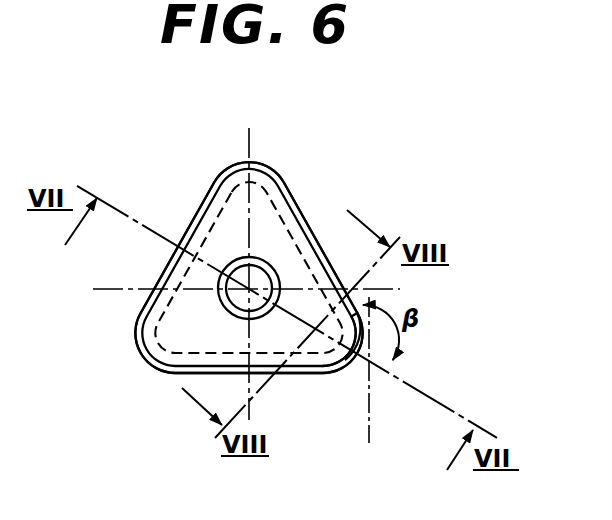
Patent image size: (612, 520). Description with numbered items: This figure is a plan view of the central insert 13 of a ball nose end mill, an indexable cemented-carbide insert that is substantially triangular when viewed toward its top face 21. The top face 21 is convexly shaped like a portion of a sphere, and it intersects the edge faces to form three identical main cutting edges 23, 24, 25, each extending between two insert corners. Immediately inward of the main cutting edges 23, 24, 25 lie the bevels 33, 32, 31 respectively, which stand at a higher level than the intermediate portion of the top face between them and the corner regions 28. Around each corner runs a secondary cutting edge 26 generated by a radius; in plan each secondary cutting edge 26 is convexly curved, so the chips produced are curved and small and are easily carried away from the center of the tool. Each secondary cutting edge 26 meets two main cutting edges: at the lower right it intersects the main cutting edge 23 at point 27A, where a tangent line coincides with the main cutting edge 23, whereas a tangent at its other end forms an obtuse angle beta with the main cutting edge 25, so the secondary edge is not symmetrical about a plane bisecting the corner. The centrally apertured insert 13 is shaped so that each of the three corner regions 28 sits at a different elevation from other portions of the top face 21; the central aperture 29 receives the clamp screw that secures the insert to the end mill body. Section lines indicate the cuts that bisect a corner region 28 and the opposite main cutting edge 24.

The central insert 13 is at (302, 210).
The top face 21 is at (270, 182).
The main cutting edge 23 is at (181, 377).
The main cutting edge 24 is at (217, 178).
The main cutting edge 25 is at (314, 228).
The secondary cutting edge 26 is at (347, 376).
The intersection point 27A is at (323, 376).
The corner region 28 is at (390, 348).
The central clamping hole 29 is at (237, 302).
The bevel 31 is at (293, 197).
The bevel 32 is at (163, 267).
The bevel 33 is at (160, 376).